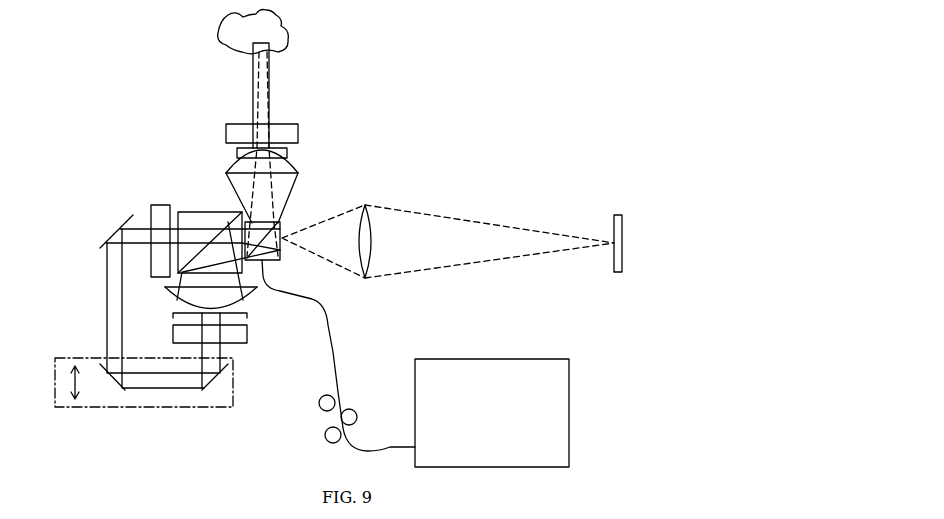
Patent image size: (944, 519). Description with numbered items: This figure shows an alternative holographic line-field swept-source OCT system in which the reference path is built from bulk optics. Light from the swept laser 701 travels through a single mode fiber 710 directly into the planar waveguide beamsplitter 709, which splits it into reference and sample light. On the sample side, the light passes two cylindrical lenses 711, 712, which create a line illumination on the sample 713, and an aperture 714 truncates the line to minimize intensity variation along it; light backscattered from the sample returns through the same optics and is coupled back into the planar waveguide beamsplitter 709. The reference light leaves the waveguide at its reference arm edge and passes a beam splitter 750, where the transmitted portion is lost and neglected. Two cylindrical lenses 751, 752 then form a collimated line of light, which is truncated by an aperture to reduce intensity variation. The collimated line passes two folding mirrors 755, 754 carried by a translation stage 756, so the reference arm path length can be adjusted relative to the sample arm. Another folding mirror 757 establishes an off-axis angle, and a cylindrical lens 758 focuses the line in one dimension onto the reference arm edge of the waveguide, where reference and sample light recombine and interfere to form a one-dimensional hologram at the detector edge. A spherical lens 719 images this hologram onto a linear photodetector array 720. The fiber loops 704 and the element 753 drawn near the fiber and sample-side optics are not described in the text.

The swept laser 701 is at (573, 410).
The fiber loops 704 is at (320, 448).
The planar waveguide beamsplitter 709 is at (281, 262).
The single mode fiber 710 is at (335, 355).
The cylindrical lens 711 is at (307, 167).
The cylindrical lens 712 is at (303, 128).
The sample 713 is at (293, 33).
The aperture 714 is at (293, 148).
The spherical lens 719 is at (367, 283).
The linear photodetector array 720 is at (613, 278).
The beam splitter 750 is at (210, 210).
The cylindrical lens 751 is at (250, 298).
The cylindrical lens 752 is at (253, 313).
The sample 753 is at (253, 347).
The folding mirror 754 is at (202, 397).
The folding mirror 755 is at (123, 397).
The translation stage 756 is at (88, 410).
The folding mirror 757 is at (117, 228).
The cylindrical lens 758 is at (157, 203).